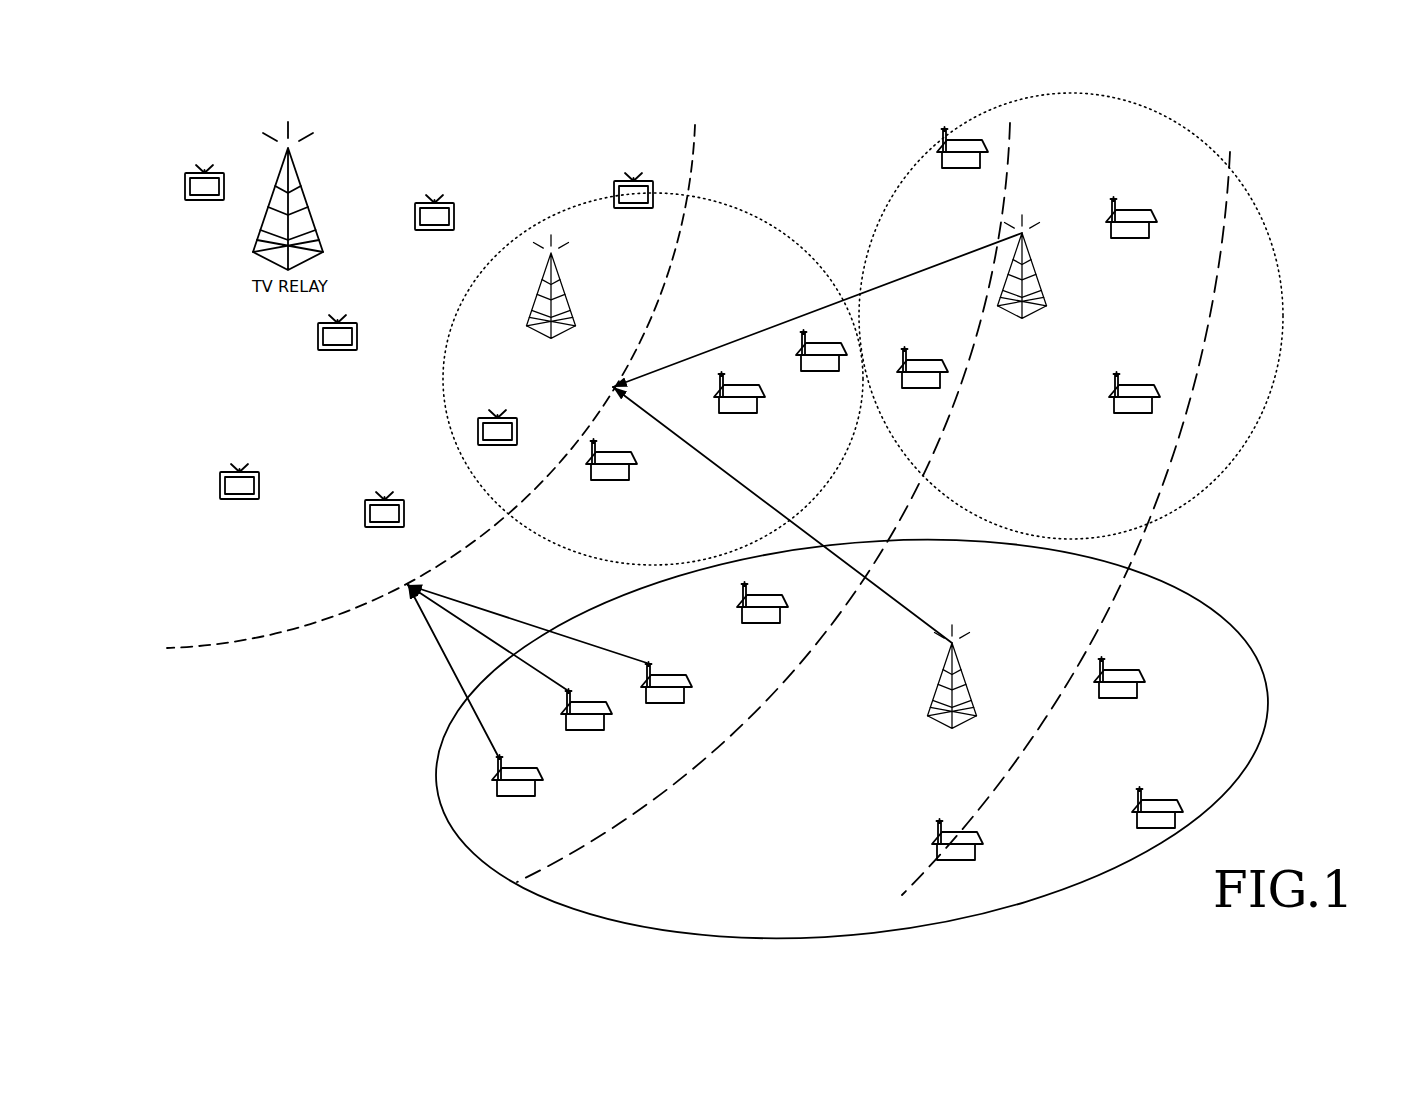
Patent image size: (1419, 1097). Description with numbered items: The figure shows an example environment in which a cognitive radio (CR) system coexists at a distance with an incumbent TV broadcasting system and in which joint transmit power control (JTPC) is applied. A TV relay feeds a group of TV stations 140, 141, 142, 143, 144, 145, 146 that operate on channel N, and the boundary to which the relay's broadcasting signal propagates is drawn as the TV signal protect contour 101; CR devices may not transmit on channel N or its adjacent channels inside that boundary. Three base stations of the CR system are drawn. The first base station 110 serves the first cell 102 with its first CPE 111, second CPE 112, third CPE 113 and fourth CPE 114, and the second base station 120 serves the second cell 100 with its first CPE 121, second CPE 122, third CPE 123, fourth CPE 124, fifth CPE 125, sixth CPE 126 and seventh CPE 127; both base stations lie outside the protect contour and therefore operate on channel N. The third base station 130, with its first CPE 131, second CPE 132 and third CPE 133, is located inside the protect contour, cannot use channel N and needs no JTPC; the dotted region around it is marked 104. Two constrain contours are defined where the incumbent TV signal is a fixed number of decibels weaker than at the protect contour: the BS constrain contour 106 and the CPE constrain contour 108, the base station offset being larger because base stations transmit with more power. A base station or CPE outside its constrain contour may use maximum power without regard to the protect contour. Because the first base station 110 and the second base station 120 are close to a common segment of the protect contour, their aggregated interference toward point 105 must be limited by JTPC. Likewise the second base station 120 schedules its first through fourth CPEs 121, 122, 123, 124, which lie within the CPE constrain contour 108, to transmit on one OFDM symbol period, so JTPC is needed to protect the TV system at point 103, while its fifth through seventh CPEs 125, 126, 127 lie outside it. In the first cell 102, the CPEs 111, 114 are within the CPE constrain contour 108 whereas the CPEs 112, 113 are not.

The cell2 100 is at (1187, 590).
The TV signal protect contour 101 is at (697, 143).
The cell1 102 is at (1282, 313).
The aggregated harmful interference point for CPE2-1 to CPE2-4 103 is at (408, 588).
The coverage area of BS 3 104 is at (763, 217).
The aggregated harmful interference point for BS1 and BS2 105 is at (613, 395).
The BS constrain contour 106 is at (1228, 198).
The CPE constrain contour 108 is at (593, 837).
The BS1 110 is at (1022, 288).
The CPE1-1 111 is at (922, 389).
The CPE1-2 112 is at (1132, 414).
The CPE1-3 113 is at (1128, 239).
The CPE1-4 114 is at (961, 166).
The BS2 120 is at (953, 698).
The CPE2-1 121 is at (761, 623).
The CPE2-2 122 is at (664, 703).
The CPE2-3 123 is at (585, 729).
The CPE2-4 124 is at (516, 796).
The CPE2-5 125 is at (1118, 699).
The CPE2-6 126 is at (955, 861).
The CPE2-7 127 is at (1156, 829).
The BS3 130 is at (551, 307).
The CPE3-1 131 is at (818, 373).
The CPE3-2 132 is at (737, 414).
The CPE3-3 133 is at (609, 480).
The TV station 140 is at (340, 355).
The TV station 141 is at (206, 207).
The TV station 142 is at (437, 233).
The TV station 143 is at (634, 213).
The TV station 144 is at (500, 451).
The TV station 145 is at (388, 534).
The TV station 146 is at (242, 505).